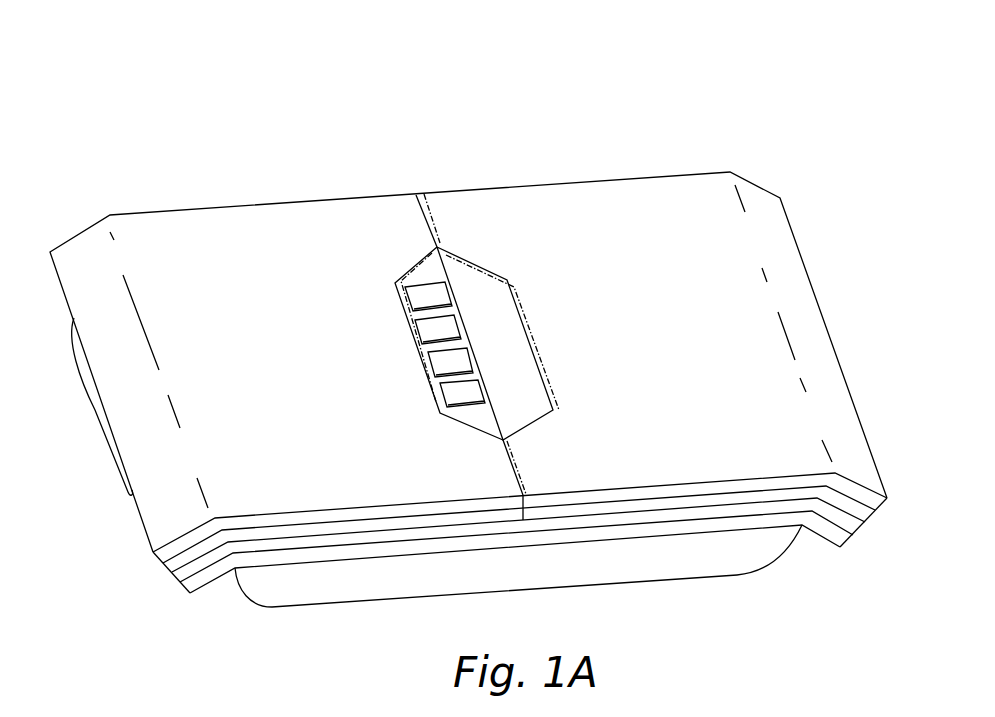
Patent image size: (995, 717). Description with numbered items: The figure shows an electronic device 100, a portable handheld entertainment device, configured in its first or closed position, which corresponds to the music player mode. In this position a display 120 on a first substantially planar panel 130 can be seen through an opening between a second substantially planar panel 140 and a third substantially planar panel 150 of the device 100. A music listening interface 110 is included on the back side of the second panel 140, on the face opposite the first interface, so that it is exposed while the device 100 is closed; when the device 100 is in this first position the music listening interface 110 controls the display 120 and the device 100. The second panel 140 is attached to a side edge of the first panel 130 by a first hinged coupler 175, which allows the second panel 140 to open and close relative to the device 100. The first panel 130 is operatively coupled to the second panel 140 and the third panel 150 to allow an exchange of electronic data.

The electronic device 100 is at (122, 102).
The music listening interface 110 is at (450, 393).
The display 120 is at (487, 293).
The first substantially planar panel 130 is at (293, 580).
The second substantially planar panel 140 is at (232, 345).
The third substantially planar panel 150 is at (680, 270).
The first hinged coupler 175 is at (104, 430).